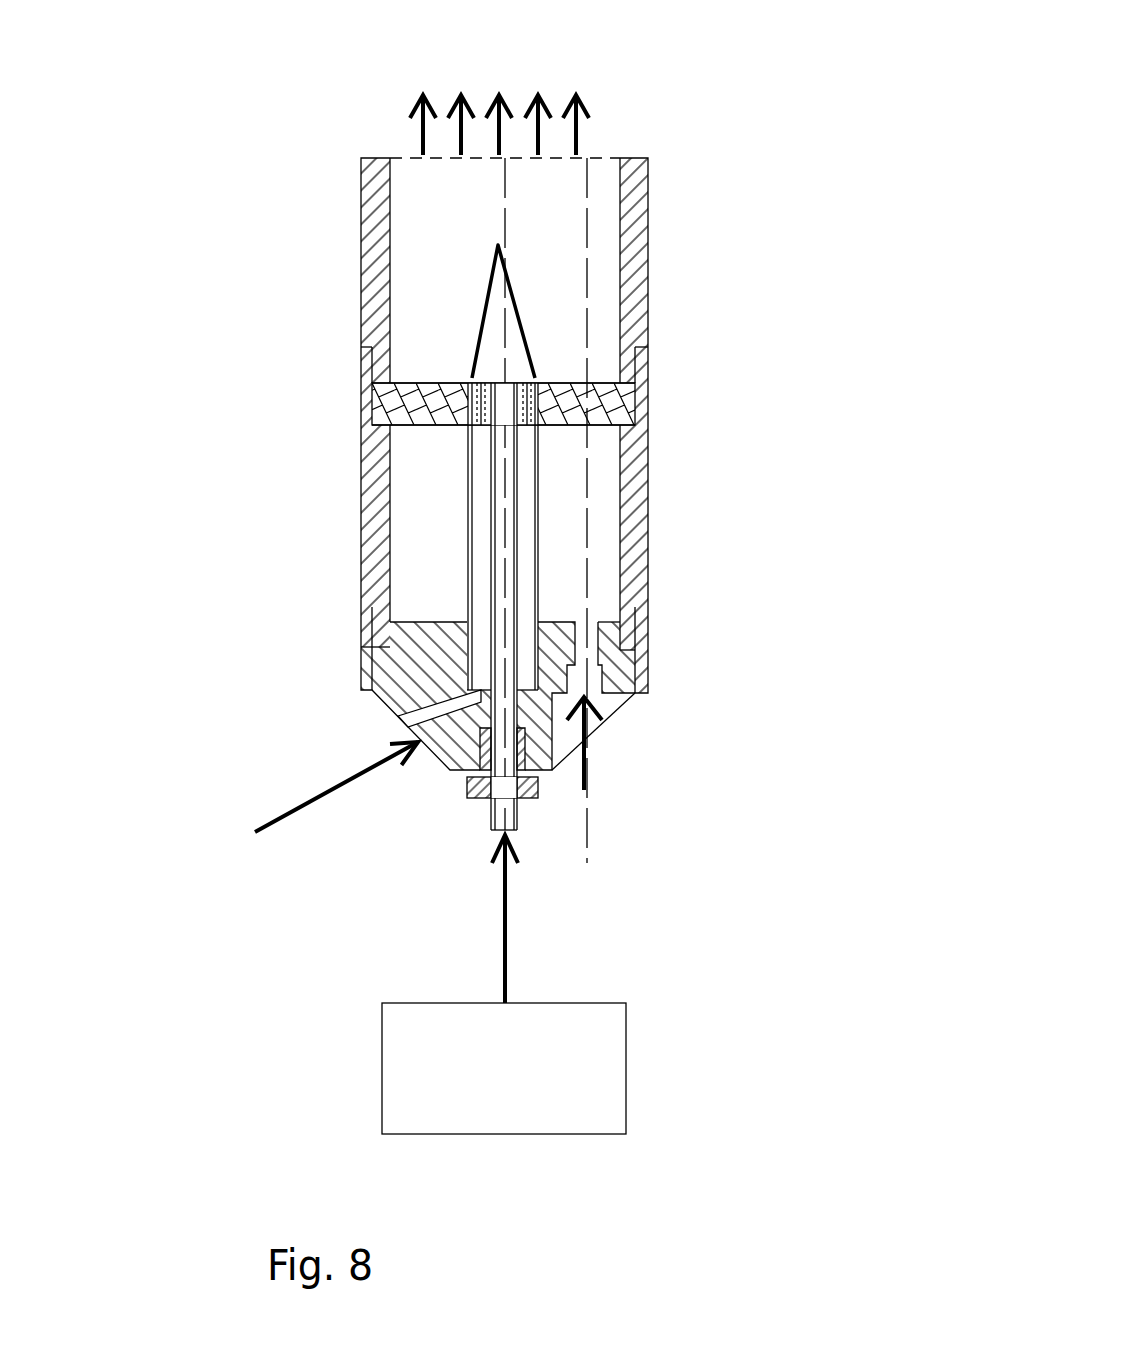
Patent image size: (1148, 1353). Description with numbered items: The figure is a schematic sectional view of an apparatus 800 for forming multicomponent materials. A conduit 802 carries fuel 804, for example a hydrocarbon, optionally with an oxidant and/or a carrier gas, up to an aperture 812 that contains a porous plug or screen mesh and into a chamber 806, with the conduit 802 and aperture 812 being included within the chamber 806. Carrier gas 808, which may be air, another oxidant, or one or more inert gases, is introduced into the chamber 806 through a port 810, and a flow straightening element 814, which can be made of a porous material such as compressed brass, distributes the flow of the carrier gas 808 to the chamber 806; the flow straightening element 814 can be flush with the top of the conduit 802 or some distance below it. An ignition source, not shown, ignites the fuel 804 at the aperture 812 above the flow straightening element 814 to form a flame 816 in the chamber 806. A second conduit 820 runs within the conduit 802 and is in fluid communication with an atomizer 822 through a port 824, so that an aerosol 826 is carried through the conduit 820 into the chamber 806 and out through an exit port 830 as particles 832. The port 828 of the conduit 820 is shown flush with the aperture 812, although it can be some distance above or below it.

The apparatus 800 is at (126, 21).
The conduit 802 is at (538, 507).
The fuel 804 is at (304, 809).
The chamber 806 is at (573, 233).
The carrier gas 808 is at (597, 766).
The port 810 is at (598, 681).
The aperture 812 is at (477, 392).
The flow straightening element 814 is at (618, 403).
The flame 816 is at (468, 302).
The conduit 820 is at (517, 553).
The atomizer 822 is at (522, 1069).
The port 824 is at (468, 780).
The aerosol 826 is at (503, 943).
The port 828 is at (503, 385).
The exit port 830 is at (440, 170).
The particles 832 is at (499, 107).